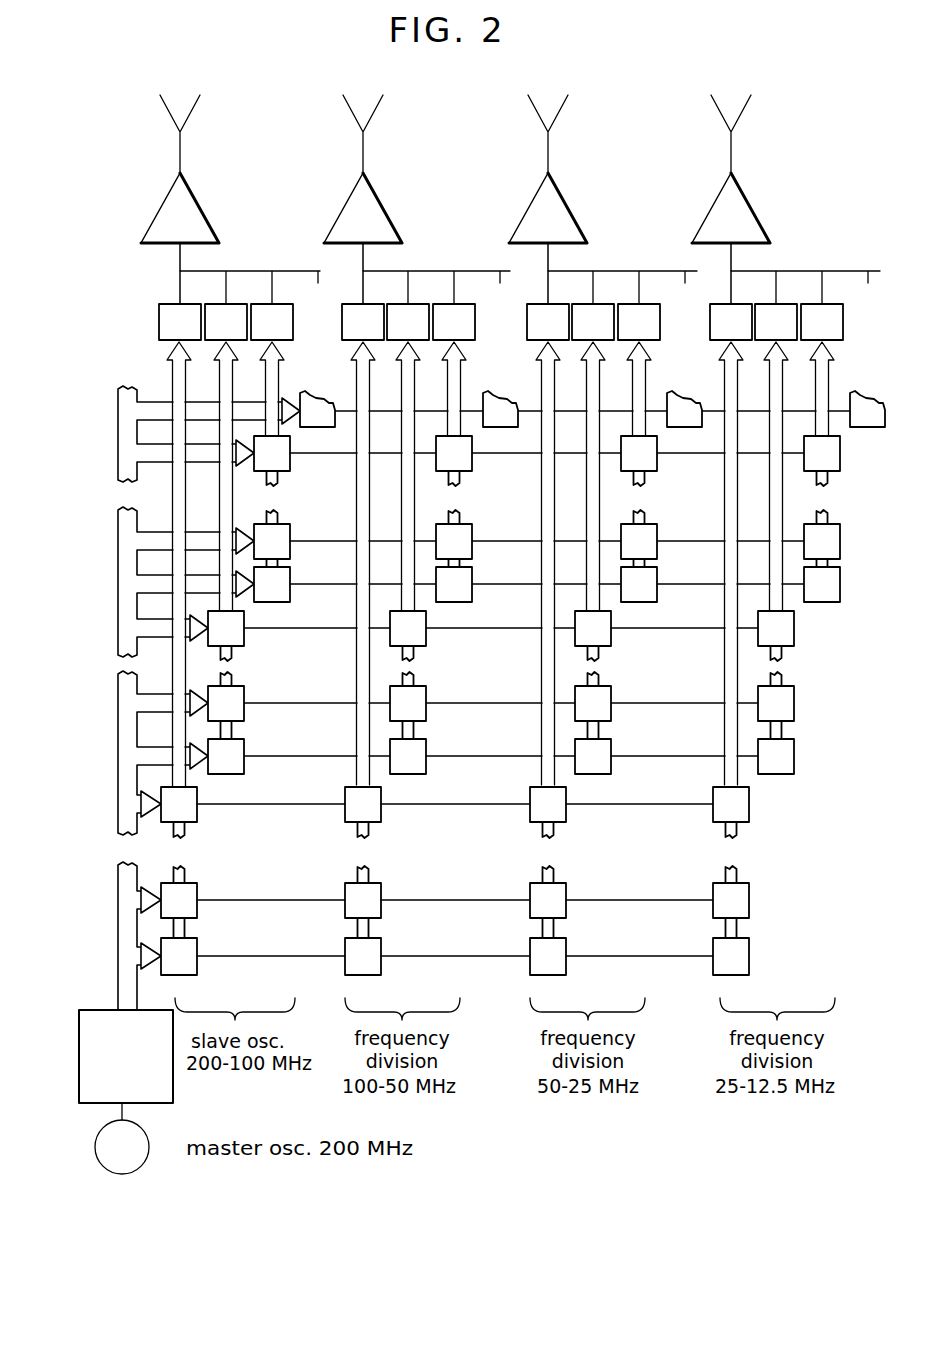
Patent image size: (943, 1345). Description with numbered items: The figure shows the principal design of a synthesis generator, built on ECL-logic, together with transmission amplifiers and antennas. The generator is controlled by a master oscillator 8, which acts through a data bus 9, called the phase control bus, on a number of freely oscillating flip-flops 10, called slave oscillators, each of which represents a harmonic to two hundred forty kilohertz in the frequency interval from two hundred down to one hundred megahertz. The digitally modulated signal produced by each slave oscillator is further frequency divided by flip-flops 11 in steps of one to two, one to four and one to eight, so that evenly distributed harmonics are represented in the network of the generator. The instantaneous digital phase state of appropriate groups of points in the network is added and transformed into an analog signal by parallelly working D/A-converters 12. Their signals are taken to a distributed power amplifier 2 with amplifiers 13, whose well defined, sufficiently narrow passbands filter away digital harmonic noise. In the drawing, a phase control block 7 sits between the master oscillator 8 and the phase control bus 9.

The distributed power amplifier 2 is at (155, 214).
The phase control 7 is at (95, 1010).
The master oscillator 8 is at (122, 1174).
The data bus 9 is at (118, 430).
The freely oscillating flip-flops 10 is at (306, 394).
The flip-flops 11 is at (428, 692).
The D/A-converters 12 is at (192, 305).
The amplifiers 13 is at (199, 204).